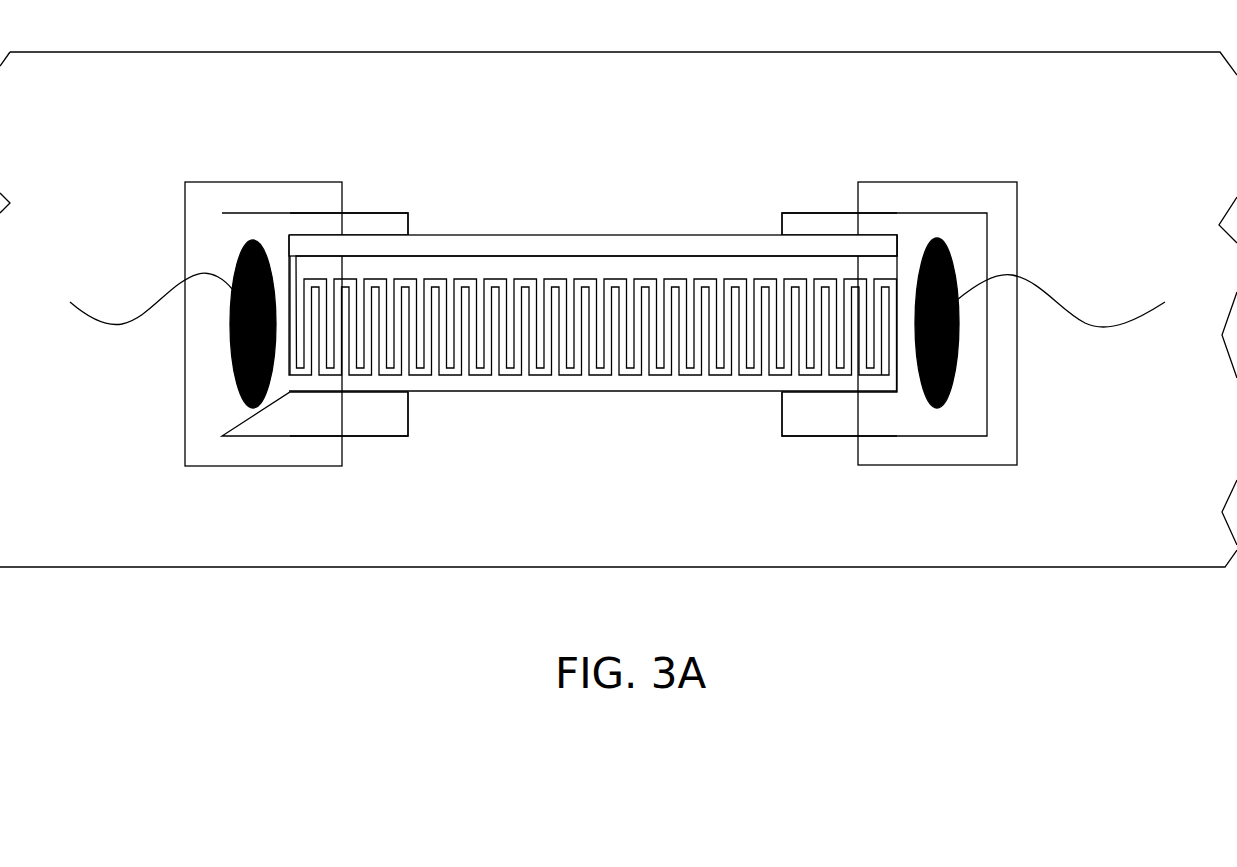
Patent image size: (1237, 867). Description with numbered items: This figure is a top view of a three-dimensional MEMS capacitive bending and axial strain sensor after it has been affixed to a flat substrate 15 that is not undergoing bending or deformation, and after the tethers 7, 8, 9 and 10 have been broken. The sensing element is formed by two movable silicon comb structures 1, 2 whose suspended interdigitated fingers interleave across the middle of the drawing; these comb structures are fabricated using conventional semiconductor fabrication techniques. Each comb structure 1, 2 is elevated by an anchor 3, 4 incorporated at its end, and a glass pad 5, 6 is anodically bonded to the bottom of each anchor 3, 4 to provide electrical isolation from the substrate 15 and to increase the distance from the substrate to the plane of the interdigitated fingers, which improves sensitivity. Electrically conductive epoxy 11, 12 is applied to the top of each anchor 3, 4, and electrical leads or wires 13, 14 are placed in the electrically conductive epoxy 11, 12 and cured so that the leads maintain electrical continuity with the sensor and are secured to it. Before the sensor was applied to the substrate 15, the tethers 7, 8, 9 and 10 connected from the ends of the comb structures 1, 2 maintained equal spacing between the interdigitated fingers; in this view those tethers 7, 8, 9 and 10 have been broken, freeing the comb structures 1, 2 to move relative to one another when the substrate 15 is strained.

The comb structure 1 is at (598, 254).
The comb structure 2 is at (589, 392).
The anchor 3 is at (946, 438).
The anchor 4 is at (265, 438).
The glass pad 5 is at (937, 181).
The glass pad 6 is at (262, 182).
The tether 7 is at (378, 212).
The tether 8 is at (373, 439).
The tether 9 is at (822, 212).
The tether 10 is at (818, 438).
The electrically conductive epoxy 11 is at (236, 396).
The electrically conductive epoxy 12 is at (958, 252).
The electrical lead 13 is at (168, 283).
The electrical lead 14 is at (1052, 300).
The flat substrate 15 is at (822, 568).